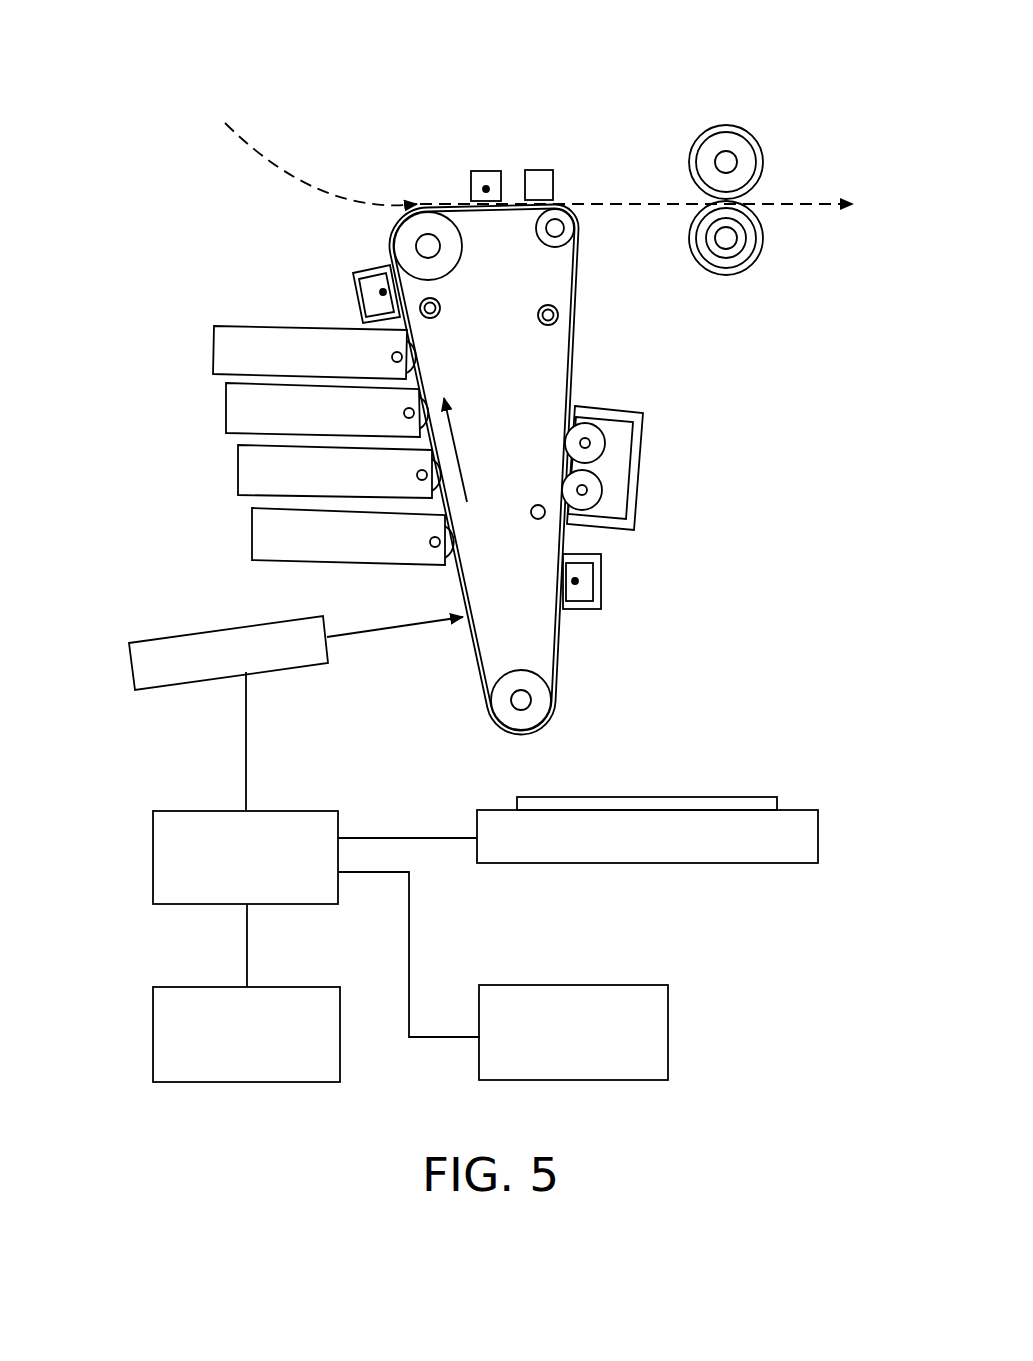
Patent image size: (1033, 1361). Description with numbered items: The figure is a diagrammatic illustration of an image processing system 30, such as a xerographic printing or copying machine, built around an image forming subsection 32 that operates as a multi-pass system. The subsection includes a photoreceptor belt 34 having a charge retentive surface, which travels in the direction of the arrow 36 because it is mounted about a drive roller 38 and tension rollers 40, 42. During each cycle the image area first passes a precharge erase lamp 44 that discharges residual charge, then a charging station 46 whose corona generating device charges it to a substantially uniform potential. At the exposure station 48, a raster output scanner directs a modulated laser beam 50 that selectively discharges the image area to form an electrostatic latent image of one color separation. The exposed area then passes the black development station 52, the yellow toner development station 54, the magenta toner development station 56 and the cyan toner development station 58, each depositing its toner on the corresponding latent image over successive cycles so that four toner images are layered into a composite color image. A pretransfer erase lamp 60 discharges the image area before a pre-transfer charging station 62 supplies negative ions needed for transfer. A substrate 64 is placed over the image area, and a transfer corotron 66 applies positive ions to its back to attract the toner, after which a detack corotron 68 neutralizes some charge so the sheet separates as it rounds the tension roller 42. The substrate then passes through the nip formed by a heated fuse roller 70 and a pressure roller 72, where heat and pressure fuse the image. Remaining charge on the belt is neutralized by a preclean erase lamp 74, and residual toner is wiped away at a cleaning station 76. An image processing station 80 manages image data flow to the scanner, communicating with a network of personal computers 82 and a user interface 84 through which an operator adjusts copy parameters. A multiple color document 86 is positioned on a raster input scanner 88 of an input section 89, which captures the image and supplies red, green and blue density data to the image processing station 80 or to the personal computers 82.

The image processing system 30 is at (743, 73).
The image forming subsection 32 is at (115, 428).
The photoreceptor belt 34 is at (472, 580).
The arrow 36 is at (460, 465).
The drive roller 38 is at (457, 262).
The tension roller 40 is at (530, 678).
The tension roller 42 is at (537, 232).
The precharge erase lamp 44 is at (532, 515).
The charging station 46 is at (603, 583).
The exposure station 48 is at (196, 633).
The laser beam 50 is at (443, 620).
The black development station 52 is at (252, 535).
The yellow toner development station 54 is at (238, 470).
The magenta toner development station 56 is at (226, 408).
The cyan toner development station 58 is at (213, 350).
The pretransfer erase lamp 60 is at (440, 313).
The pre-transfer charging station 62 is at (355, 285).
The substrate 64 is at (338, 195).
The transfer corotron 66 is at (485, 170).
The detack corotron 68 is at (540, 170).
The heated fuse roller 70 is at (760, 265).
The pressure roller 72 is at (760, 135).
The preclean erase lamp 74 is at (540, 323).
The cleaning station 76 is at (640, 475).
The image processing station 80 is at (283, 809).
The personal computer 82 is at (588, 983).
The user interface 84 is at (275, 985).
The multiple color document 86 is at (700, 797).
The raster input scanner 88 is at (818, 830).
The input section 89 is at (823, 787).